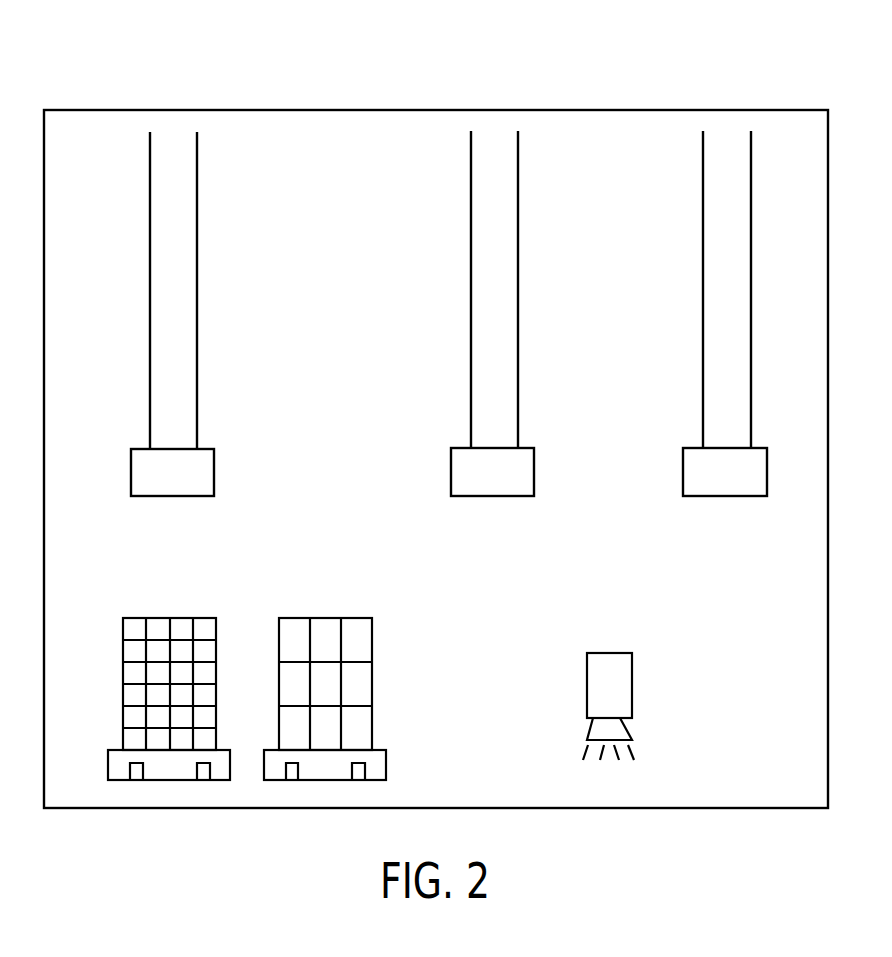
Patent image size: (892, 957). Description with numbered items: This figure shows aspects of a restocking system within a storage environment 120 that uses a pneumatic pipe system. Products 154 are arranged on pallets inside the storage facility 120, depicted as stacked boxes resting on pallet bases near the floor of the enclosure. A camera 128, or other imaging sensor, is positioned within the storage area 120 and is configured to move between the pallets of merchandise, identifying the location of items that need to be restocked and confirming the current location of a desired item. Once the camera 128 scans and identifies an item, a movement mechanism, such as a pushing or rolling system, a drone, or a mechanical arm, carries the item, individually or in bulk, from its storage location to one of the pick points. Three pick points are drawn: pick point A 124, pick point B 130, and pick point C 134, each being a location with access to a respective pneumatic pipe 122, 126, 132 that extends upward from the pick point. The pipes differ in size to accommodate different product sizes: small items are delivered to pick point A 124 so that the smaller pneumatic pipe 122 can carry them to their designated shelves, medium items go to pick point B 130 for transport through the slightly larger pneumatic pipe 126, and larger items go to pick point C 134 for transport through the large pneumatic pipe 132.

The storage environment 120 is at (570, 110).
The pneumatic pipe 122 is at (198, 380).
The pick point A 124 is at (214, 458).
The pneumatic pipe 126 is at (518, 353).
The camera 128 is at (607, 653).
The pick point B 130 is at (534, 465).
The pneumatic pipe 132 is at (703, 292).
The pick point C 134 is at (683, 490).
The products 154 is at (180, 618).